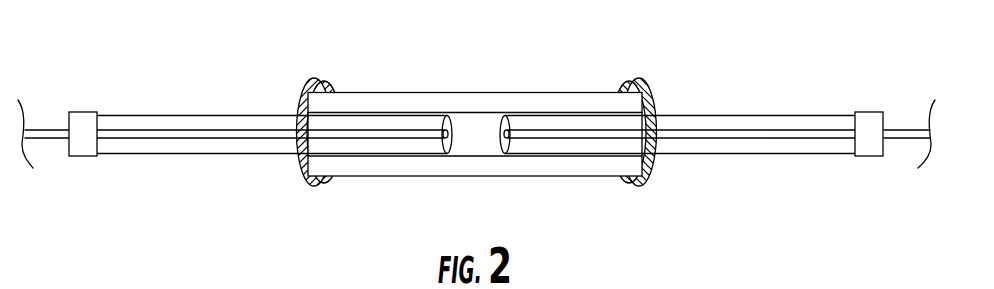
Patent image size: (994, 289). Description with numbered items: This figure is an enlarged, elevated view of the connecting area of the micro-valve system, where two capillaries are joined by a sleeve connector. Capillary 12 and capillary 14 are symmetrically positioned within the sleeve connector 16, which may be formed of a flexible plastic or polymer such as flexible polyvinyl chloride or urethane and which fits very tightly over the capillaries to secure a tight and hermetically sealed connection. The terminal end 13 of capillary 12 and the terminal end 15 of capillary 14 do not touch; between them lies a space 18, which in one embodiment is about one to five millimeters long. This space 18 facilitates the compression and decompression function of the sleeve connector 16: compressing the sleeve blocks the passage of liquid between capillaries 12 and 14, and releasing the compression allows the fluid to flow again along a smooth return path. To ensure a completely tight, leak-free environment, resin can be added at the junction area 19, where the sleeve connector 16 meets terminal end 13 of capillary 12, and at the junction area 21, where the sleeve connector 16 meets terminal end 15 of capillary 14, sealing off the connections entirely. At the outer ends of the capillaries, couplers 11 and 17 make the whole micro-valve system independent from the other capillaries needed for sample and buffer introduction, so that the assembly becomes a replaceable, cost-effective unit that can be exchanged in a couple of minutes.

The coupler 11 is at (83, 112).
The capillary 12 is at (263, 112).
The terminal end of capillary 12 13 is at (455, 152).
The capillary 14 is at (690, 112).
The terminal end of capillary 14 15 is at (498, 152).
The sleeve connector 16 is at (532, 100).
The coupler 17 is at (870, 112).
The space 18 is at (478, 118).
The junction area 19 is at (447, 117).
The junction area 21 is at (507, 117).